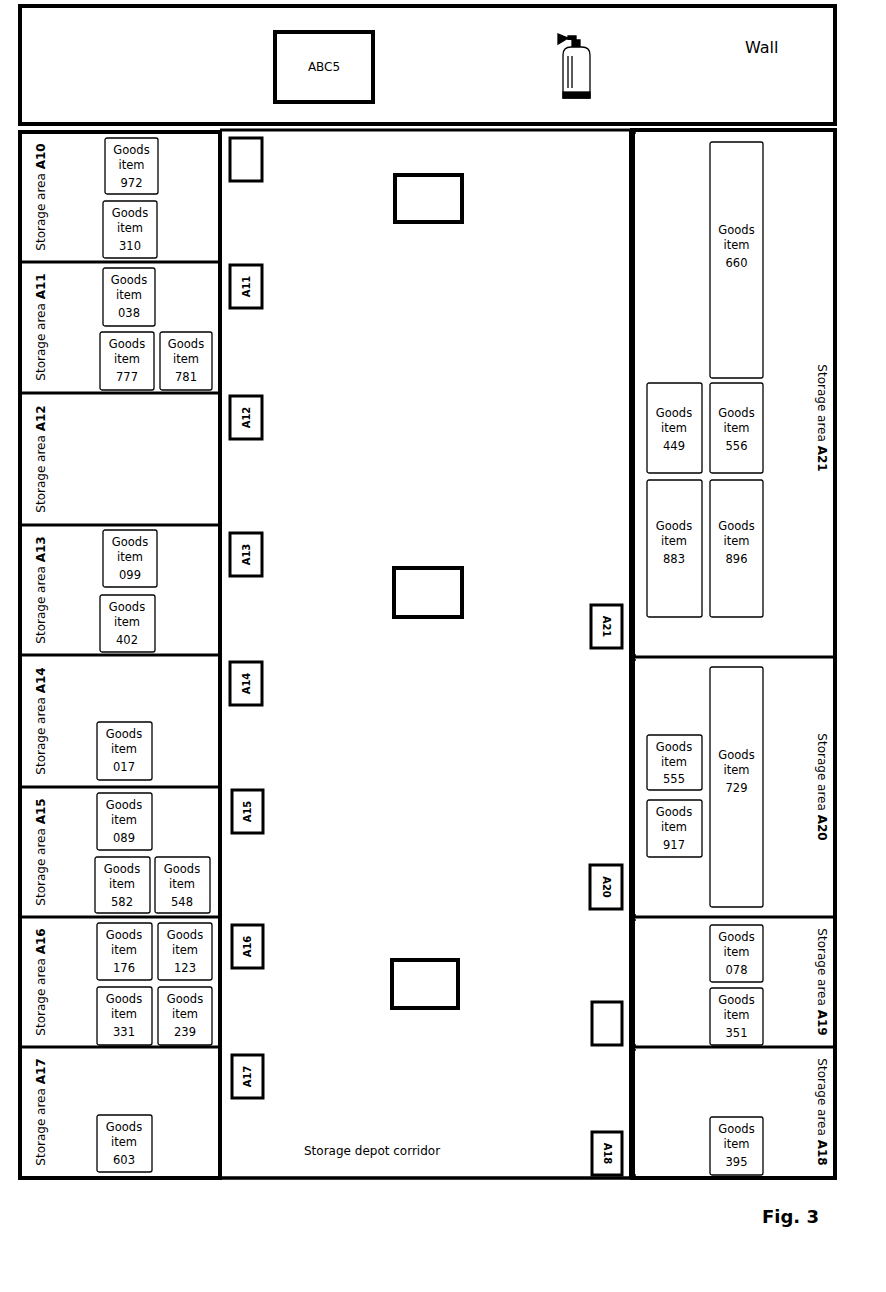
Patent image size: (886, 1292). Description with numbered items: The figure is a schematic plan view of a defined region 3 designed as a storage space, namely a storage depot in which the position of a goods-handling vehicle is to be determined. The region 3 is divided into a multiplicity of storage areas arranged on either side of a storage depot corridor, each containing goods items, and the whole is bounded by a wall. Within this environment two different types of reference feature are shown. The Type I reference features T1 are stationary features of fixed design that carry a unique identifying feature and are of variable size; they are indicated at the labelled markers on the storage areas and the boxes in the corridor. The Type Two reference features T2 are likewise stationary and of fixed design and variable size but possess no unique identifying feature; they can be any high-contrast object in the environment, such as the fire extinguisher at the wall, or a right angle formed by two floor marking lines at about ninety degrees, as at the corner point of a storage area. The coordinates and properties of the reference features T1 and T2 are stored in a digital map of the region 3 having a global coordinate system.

The defined region 3 is at (532, 1183).
The Type I reference feature T1 is at (420, 173).
The Type 2 reference feature T2 is at (629, 130).